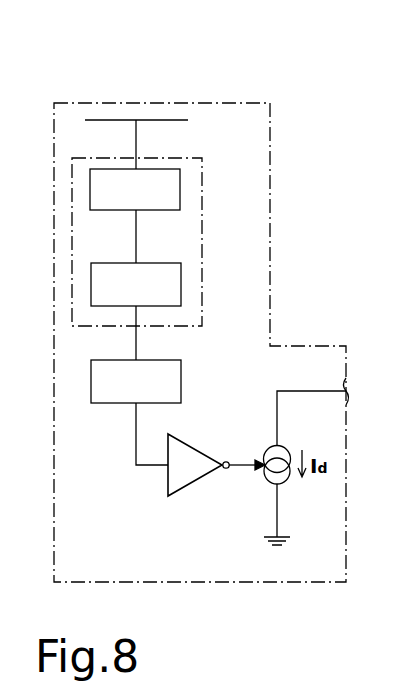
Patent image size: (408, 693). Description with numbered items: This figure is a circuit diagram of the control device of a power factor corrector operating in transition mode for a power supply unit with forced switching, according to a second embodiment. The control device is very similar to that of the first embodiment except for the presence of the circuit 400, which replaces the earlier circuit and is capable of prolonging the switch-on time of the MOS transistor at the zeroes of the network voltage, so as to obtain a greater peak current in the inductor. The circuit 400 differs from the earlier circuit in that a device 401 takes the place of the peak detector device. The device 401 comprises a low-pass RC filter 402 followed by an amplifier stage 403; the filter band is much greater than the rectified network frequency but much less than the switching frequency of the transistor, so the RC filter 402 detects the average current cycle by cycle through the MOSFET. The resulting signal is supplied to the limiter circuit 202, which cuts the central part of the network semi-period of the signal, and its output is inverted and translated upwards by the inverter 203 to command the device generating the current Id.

The circuit 400 is at (140, 104).
The device 401 is at (203, 235).
The low-pass RC filter 402 is at (135, 189).
The amplifier stage 403 is at (136, 284).
The limiter circuit 202 is at (136, 381).
The inverter 203 is at (193, 460).